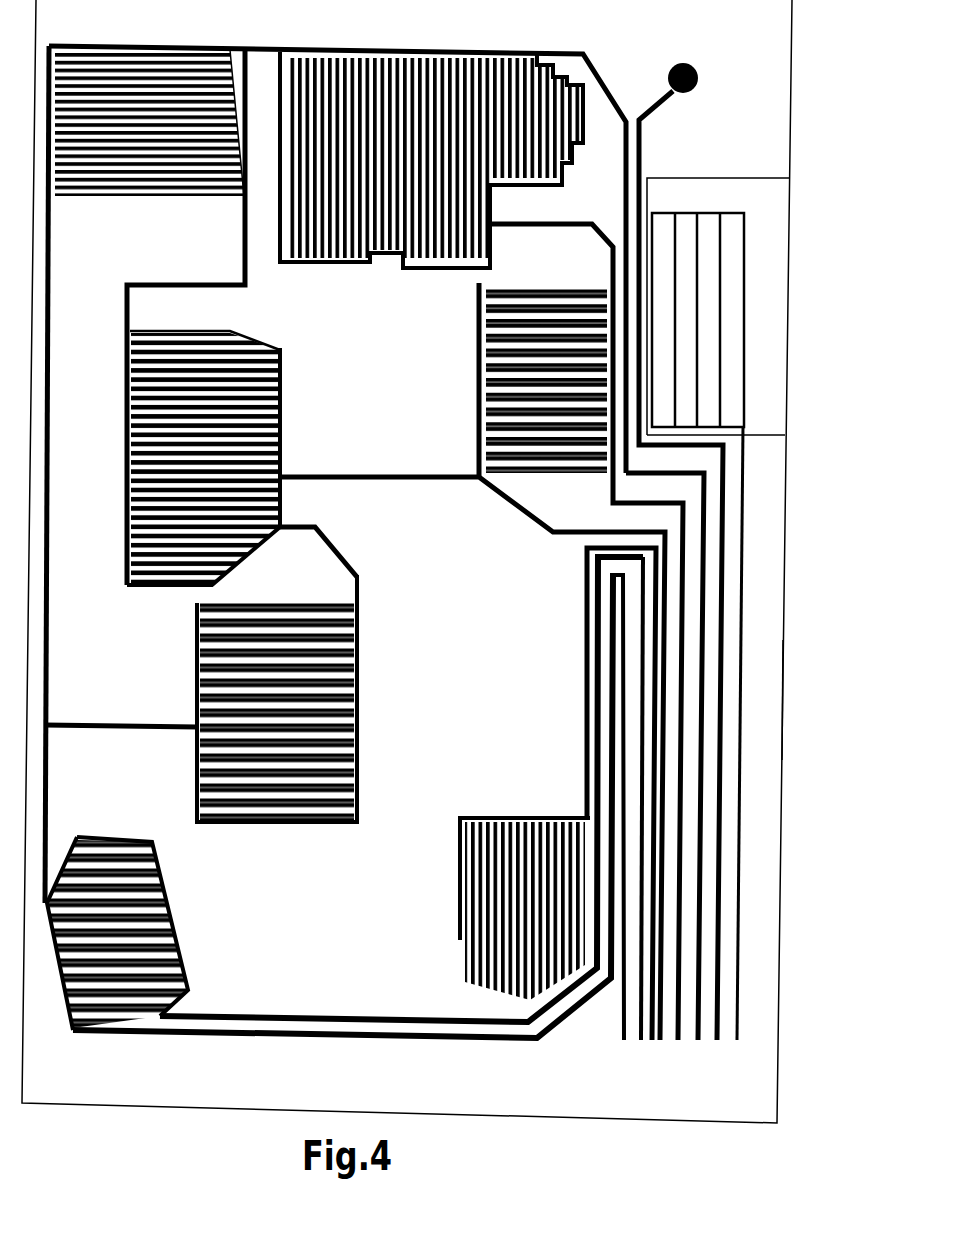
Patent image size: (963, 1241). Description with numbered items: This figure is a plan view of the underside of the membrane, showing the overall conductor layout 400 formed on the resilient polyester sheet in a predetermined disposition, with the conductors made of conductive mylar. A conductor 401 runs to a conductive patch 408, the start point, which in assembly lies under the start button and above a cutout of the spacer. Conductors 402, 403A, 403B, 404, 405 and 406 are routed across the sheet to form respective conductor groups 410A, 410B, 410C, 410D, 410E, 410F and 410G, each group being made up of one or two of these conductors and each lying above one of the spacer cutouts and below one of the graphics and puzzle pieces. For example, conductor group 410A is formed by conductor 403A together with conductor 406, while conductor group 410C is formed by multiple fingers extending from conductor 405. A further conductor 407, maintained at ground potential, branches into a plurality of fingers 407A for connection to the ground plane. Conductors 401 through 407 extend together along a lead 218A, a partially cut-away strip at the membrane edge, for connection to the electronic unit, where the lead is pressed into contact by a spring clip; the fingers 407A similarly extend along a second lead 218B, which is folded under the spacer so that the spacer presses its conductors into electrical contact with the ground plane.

The heater circuit assembly 400 is at (497, 1063).
The conductor 401 is at (717, 1050).
The conductor 402 is at (697, 1058).
The conductor 403A is at (624, 1050).
The conductor 403B is at (678, 1045).
The conductor 404 is at (650, 1045).
The conductor 405 is at (640, 1050).
The conductor 406 is at (613, 1045).
The conductor 407 is at (733, 1037).
The fingers 407A is at (687, 222).
The conductive patch 408 is at (699, 82).
The lead 218A is at (760, 665).
The lead 218B is at (768, 335).
The conductor group 410A is at (177, 907).
The conductor group 410B is at (357, 758).
The conductor group 410C is at (460, 880).
The conductor group 410D is at (283, 402).
The conductor group 410E is at (380, 50).
The conductor group 410F is at (157, 43).
The conductor group 410G is at (477, 323).